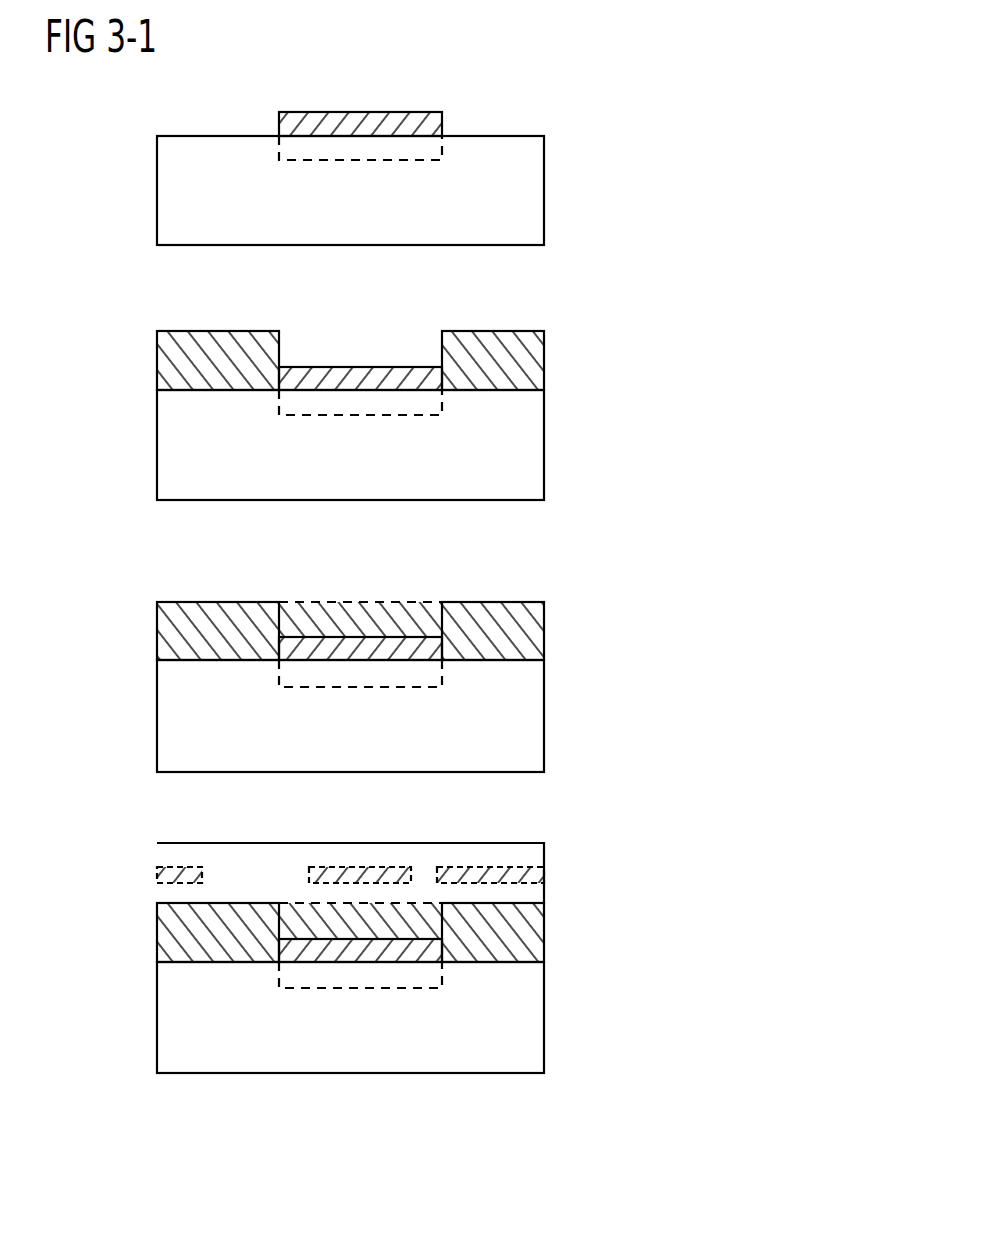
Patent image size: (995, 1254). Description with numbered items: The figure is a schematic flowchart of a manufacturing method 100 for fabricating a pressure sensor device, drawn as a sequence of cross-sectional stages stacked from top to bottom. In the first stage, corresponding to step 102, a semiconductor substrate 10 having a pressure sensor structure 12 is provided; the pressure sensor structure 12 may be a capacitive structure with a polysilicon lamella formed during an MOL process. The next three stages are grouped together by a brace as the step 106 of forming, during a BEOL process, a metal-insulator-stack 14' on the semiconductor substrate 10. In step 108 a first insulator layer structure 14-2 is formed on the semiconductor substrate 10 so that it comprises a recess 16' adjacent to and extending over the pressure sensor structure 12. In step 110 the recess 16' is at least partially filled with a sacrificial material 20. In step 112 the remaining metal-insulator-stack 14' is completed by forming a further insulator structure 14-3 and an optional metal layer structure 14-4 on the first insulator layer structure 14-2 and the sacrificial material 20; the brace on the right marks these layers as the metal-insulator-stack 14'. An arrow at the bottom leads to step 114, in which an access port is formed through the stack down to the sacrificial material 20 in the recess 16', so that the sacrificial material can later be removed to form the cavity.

The manufacturing method 100 is at (618, 66).
The semiconductor substrate 10 is at (537, 195).
The pressure sensor structure 12 is at (421, 124).
The first insulator layer structure 14-2 is at (562, 355).
The further insulator structure 14-3 is at (562, 895).
The optional metal layer structure 14-4 is at (562, 870).
The metal-insulator-stack 14' is at (778, 901).
The recess 16' is at (364, 620).
The sacrificial material 20 is at (306, 585).
The step of providing the semiconductor substrate 102 is at (122, 198).
The step of forming the metal-insulator-stack 106 is at (95, 412).
The step of forming the first insulator layer structure 108 is at (122, 436).
The step of filling the recess 110 is at (122, 700).
The step of forming the remaining metal-insulator-stack 112 is at (122, 966).
The step of forming an access port 114 is at (194, 1113).